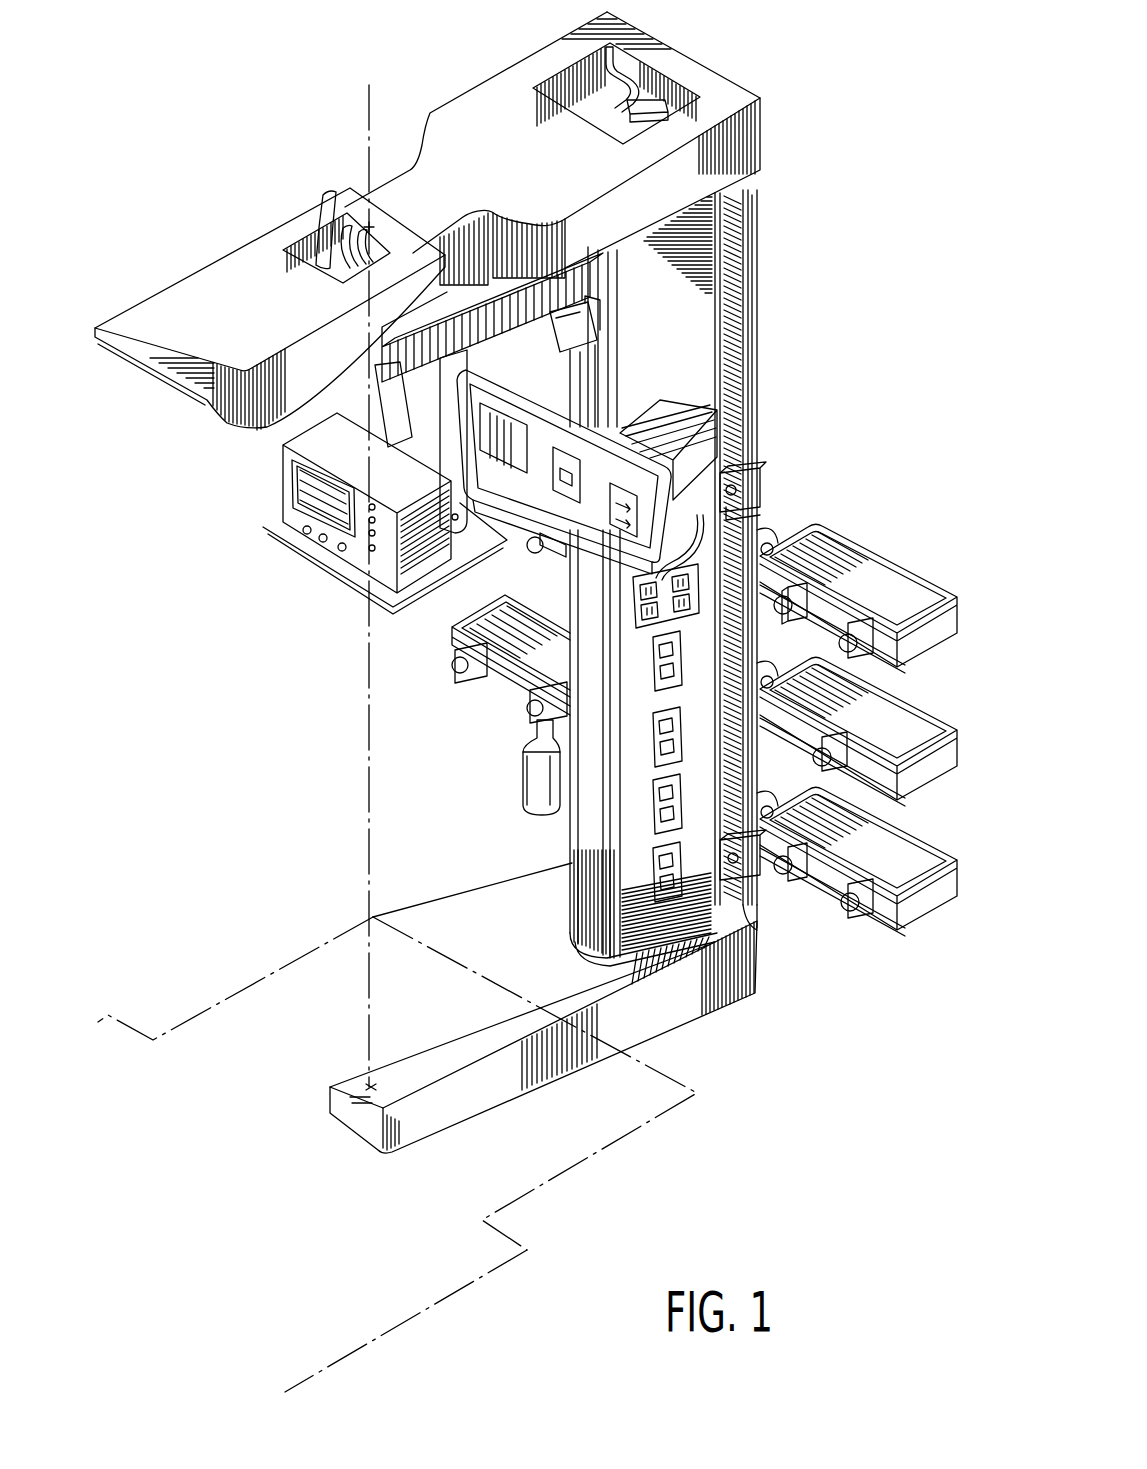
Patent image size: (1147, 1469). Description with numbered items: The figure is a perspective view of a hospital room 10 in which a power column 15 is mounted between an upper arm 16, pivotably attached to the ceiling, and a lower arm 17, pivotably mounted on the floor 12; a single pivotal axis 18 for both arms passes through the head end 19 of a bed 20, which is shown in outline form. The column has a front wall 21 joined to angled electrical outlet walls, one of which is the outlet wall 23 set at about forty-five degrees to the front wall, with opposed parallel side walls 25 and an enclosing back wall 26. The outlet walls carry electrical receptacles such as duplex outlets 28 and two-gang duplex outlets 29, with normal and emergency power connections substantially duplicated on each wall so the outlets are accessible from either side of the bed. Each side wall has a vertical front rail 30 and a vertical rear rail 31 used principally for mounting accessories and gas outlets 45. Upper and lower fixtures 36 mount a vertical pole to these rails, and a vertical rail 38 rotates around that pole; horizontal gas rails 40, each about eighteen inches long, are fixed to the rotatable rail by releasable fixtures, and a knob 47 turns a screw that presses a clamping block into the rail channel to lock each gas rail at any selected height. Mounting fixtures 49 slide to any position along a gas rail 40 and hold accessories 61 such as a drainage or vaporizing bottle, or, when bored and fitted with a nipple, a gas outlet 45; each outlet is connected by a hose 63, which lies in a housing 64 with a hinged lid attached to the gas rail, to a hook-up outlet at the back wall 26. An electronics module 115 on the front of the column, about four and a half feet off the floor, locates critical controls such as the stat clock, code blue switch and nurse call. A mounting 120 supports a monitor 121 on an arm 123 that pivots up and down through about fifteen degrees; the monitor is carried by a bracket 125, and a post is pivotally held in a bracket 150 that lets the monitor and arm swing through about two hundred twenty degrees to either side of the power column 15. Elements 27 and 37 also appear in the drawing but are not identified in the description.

The hospital room 10 is at (240, 754).
The floor 12 is at (458, 1024).
The power column 15 is at (825, 58).
The upper arm 16 is at (458, 98).
The lower arm 17 is at (480, 1098).
The pivotal axis 18 is at (369, 850).
The head end 19 is at (588, 1158).
The bed 20 is at (425, 1305).
The front wall 21 is at (572, 863).
The outlet wall 23 is at (635, 940).
The side wall 25 is at (740, 205).
The back wall 26 is at (753, 237).
The rail bottom end 27 is at (757, 927).
The duplex outlets 28 is at (683, 722).
The two-gang duplex outlets 29 is at (633, 590).
The vertical front rail 30 is at (727, 273).
The vertical rear rail 31 is at (753, 307).
The fixtures 36 is at (757, 458).
The lower clamp 37 is at (757, 867).
The vertical rail 38 is at (760, 507).
The horizontal gas rail 40 is at (948, 578).
The gas outlet 45 is at (457, 673).
The knob 47 is at (797, 832).
The mounting fixture 49 is at (470, 683).
The accessory 61 is at (527, 773).
The hose 63 is at (802, 667).
The housing 64 is at (877, 538).
The electronics module 115 is at (677, 458).
The mounting 120 is at (358, 364).
The monitor 121 is at (275, 518).
The arm 123 is at (440, 333).
The bracket 125 is at (380, 428).
The bracket 150 is at (587, 328).